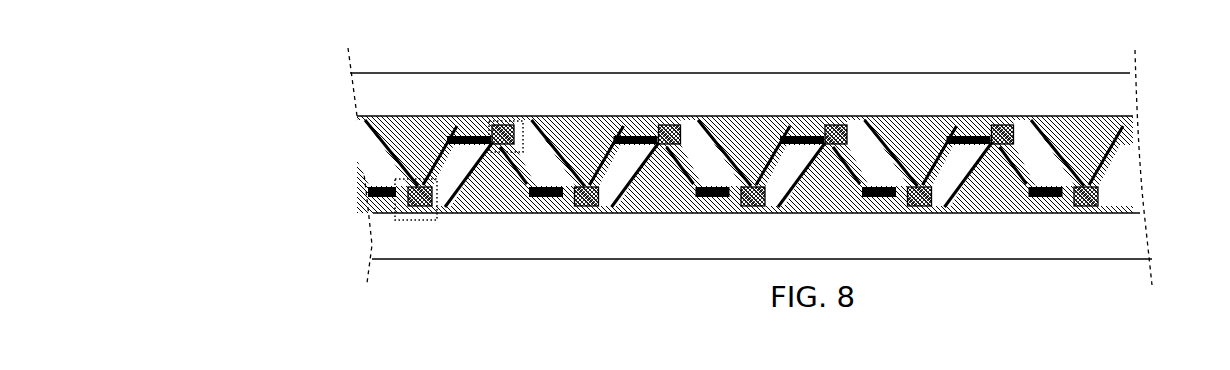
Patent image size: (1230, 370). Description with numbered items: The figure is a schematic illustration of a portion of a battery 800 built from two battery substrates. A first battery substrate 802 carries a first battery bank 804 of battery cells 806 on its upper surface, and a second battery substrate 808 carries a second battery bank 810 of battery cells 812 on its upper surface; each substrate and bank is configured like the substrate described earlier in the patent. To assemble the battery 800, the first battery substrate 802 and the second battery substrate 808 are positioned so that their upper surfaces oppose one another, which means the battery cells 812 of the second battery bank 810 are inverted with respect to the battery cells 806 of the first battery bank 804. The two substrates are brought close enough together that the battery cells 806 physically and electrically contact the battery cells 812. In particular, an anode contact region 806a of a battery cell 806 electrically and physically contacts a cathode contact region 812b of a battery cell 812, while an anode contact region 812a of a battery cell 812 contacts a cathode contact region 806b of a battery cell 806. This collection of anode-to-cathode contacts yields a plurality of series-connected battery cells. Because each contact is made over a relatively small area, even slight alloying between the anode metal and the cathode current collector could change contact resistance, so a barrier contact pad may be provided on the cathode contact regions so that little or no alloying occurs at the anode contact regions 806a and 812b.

The battery 800 is at (839, 367).
The first battery substrate 802 is at (1002, 262).
The first battery bank 804 is at (359, 150).
The battery cells 806 is at (652, 217).
The anode contact region 806a is at (396, 172).
The cathode contact region 806b is at (420, 222).
The second battery substrate 808 is at (1008, 70).
The second battery bank 810 is at (1140, 112).
The battery cells 812 is at (578, 107).
The anode contact region 812a is at (497, 163).
The cathode contact region 812b is at (509, 113).